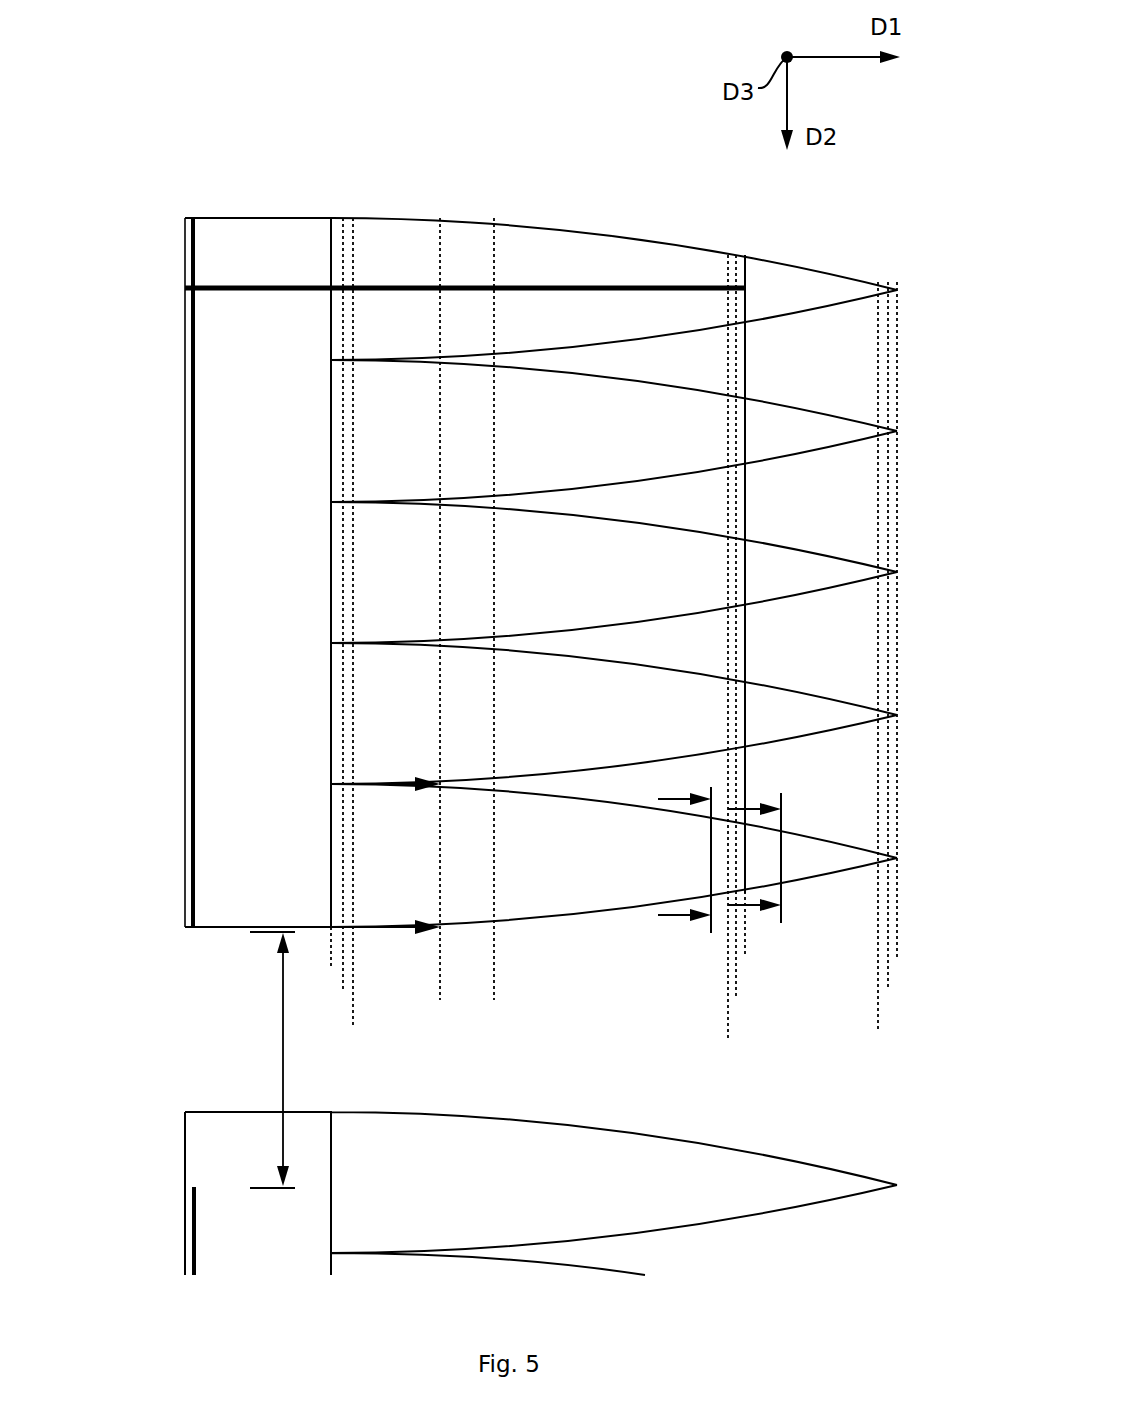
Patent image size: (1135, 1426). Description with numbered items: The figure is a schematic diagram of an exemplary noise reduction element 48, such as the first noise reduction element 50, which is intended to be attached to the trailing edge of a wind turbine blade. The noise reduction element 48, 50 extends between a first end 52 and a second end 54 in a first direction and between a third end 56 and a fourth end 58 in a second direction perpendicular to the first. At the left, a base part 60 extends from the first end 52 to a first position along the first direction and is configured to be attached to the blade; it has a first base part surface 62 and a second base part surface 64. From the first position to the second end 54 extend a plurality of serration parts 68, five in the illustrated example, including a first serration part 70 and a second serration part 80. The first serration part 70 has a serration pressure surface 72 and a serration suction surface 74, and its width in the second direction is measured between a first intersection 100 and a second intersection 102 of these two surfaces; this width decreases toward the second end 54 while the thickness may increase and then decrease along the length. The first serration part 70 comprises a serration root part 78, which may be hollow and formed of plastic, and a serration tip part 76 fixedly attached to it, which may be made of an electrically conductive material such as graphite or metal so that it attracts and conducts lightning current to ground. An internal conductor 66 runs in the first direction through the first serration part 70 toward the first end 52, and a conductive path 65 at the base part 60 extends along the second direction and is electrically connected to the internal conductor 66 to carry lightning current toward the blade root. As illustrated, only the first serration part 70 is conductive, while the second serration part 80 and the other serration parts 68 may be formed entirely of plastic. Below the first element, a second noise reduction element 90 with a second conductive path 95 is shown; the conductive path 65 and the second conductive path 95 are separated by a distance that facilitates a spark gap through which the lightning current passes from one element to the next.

The noise reduction element 48 is at (214, 98).
The first noise reduction element 50 is at (526, 596).
The first end 52 is at (185, 927).
The second end 54 is at (912, 635).
The third end 56 is at (185, 218).
The fourth end 58 is at (185, 927).
The base part 60 is at (265, 240).
The first base part surface 62 is at (300, 240).
The second base part surface 64 is at (199, 205).
The conductive path 65 is at (198, 900).
The internal conductor 66 is at (375, 285).
The serration parts 68 is at (800, 283).
The first serration part 70 is at (577, 240).
The serration pressure surface 72 is at (455, 195).
The serration suction surface 74 is at (413, 240).
The serration tip part 76 is at (782, 270).
The serration root part 78 is at (513, 240).
The second serration part 80 is at (628, 405).
The second noise reduction element 90 is at (140, 1120).
The second conductive path 95 is at (198, 1183).
The first intersection 100 is at (660, 240).
The second intersection 102 is at (700, 330).